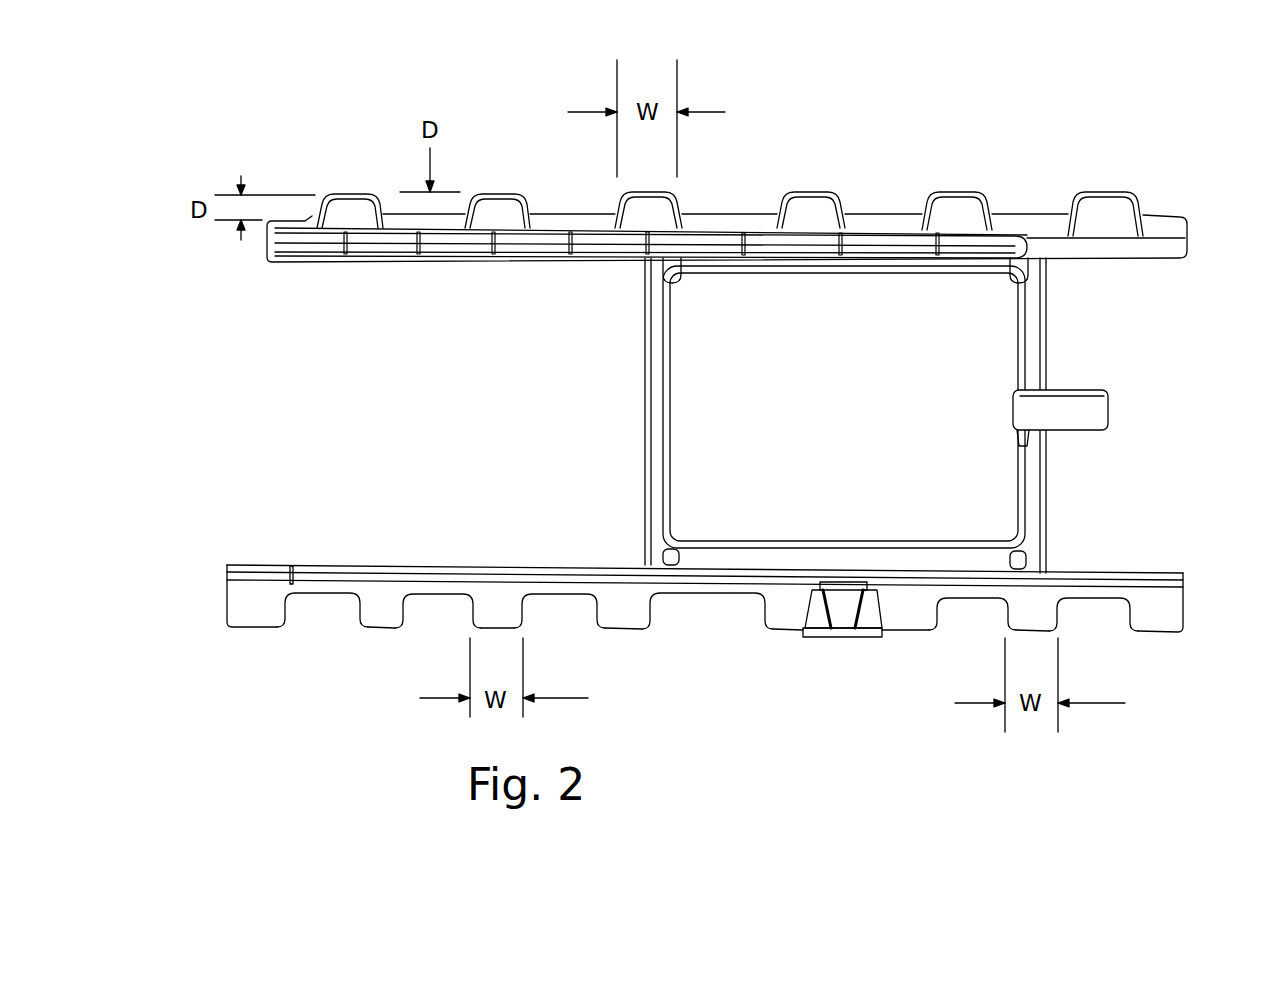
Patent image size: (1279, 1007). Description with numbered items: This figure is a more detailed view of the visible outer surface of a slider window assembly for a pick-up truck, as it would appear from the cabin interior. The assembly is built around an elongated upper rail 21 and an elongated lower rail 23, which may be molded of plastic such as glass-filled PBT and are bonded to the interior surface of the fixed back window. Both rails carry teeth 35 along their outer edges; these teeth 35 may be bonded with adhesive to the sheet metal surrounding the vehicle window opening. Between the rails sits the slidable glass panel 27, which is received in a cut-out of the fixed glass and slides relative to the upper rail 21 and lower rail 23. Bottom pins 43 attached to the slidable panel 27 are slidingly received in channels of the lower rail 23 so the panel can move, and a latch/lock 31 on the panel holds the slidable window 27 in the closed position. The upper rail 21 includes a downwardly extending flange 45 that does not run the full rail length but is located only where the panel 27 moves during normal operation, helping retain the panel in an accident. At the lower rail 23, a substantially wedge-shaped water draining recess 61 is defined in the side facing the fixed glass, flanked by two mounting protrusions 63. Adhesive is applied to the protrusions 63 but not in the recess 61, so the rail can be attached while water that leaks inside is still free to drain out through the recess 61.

The upper rail 21 is at (1168, 227).
The lower rail 23 is at (1167, 589).
The slidable glass panel 27 is at (850, 424).
The latch/lock 31 is at (1078, 400).
The teeth 35 is at (948, 206).
The bottom pins 43 is at (660, 563).
The downwardly extending flange 45 is at (375, 250).
The water draining recess 61 is at (843, 623).
The mounting protrusions 63 is at (818, 629).